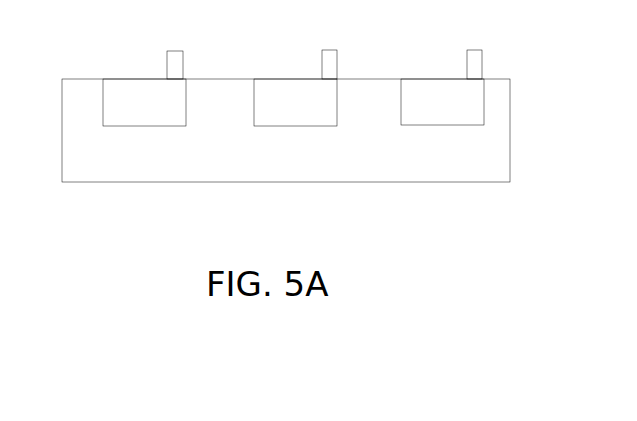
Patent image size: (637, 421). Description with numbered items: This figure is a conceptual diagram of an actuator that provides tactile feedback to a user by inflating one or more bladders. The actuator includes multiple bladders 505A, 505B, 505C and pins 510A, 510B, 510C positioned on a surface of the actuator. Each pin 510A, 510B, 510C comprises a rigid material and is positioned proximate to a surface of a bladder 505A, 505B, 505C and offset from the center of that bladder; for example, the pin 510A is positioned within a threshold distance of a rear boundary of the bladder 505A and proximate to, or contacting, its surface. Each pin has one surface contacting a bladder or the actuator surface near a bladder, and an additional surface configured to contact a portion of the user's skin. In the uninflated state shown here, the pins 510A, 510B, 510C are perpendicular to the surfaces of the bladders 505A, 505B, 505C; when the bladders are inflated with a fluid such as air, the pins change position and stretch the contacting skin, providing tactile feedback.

The bladder 505A is at (147, 127).
The bladder 505B is at (296, 127).
The bladder 505C is at (443, 127).
The pin 510A is at (175, 52).
The pin 510B is at (332, 50).
The pin 510C is at (478, 50).